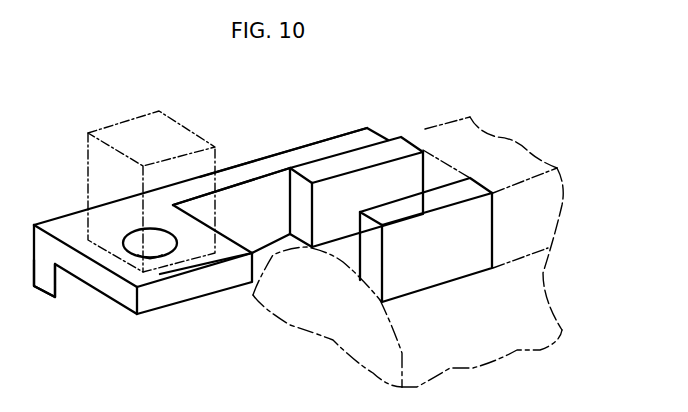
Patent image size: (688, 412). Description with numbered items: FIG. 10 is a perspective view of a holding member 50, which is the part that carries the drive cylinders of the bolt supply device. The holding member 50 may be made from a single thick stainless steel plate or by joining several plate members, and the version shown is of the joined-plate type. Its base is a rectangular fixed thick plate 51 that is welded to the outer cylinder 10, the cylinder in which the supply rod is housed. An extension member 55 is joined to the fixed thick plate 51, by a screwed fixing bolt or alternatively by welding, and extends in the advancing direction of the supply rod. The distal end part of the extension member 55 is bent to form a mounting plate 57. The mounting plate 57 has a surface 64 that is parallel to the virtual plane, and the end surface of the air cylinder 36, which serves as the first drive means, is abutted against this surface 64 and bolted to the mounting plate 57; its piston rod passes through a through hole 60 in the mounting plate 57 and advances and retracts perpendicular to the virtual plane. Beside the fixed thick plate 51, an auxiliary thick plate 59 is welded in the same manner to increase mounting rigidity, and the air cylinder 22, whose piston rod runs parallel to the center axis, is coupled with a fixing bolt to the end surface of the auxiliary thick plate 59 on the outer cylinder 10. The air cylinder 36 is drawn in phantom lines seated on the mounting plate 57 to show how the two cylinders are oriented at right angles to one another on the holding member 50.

The outer cylinder 10 is at (525, 302).
The air cylinder 22 is at (517, 165).
The air cylinder 36 is at (153, 130).
The holding member 50 is at (194, 190).
The fixed thick plate 51 is at (345, 160).
The extension member 55 is at (263, 168).
The mounting plate 57 is at (188, 265).
The auxiliary thick plate 59 is at (443, 197).
The through hole 60 is at (131, 245).
The surface 64 is at (110, 262).